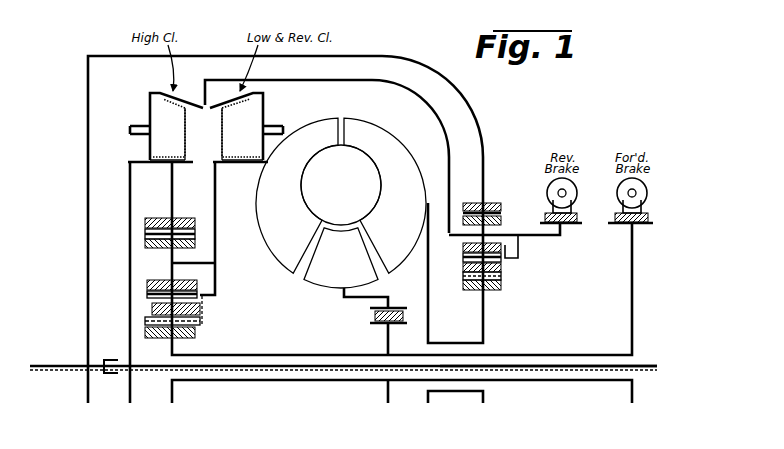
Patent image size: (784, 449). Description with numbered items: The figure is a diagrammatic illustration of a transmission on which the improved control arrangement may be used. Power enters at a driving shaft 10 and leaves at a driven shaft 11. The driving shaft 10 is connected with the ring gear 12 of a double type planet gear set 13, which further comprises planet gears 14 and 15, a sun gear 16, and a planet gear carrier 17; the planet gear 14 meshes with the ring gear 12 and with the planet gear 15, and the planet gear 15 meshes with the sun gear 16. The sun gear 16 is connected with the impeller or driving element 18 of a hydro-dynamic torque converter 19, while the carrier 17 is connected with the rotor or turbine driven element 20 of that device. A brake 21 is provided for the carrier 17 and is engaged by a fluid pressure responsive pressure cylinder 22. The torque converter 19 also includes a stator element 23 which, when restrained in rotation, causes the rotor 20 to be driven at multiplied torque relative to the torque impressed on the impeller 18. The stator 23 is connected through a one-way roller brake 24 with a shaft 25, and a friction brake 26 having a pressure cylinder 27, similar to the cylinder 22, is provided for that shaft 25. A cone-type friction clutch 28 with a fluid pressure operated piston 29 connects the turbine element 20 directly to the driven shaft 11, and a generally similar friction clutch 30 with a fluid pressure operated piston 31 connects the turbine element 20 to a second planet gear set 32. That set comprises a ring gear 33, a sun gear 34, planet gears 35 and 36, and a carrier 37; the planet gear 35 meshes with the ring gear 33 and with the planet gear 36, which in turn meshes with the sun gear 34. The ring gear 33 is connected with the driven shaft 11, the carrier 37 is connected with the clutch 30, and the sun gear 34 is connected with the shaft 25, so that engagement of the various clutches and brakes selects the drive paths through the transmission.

The driving shaft 10 is at (59, 362).
The driven shaft 11 is at (640, 363).
The ring gear 12 is at (489, 203).
The double type planet gear set 13 is at (507, 211).
The planet gear 14 is at (463, 250).
The planet gear 15 is at (504, 270).
The sun gear 16 is at (465, 278).
The planet gear carrier 17 is at (545, 237).
The impeller or driving element 18 is at (381, 147).
The hydro-dynamic torque converter 19 is at (351, 189).
The rotor or turbine driven element 20 is at (324, 147).
The brake 21 is at (587, 224).
The pressure cylinder 22 is at (577, 191).
The stator element 23 is at (348, 264).
The one-way roller brake 24 is at (371, 316).
The shaft 25 is at (518, 361).
The friction brake 26 is at (656, 222).
The pressure cylinder 27 is at (647, 191).
The friction clutch 28 is at (149, 91).
The fluid pressure operated piston 29 is at (186, 130).
The friction clutch 30 is at (268, 97).
The fluid pressure operated piston 31 is at (223, 130).
The planet gear set 32 is at (147, 265).
The ring gear 33 is at (187, 218).
The sun gear 34 is at (196, 335).
The planet gear 35 is at (193, 246).
The planet gear 36 is at (200, 310).
The carrier 37 is at (216, 266).